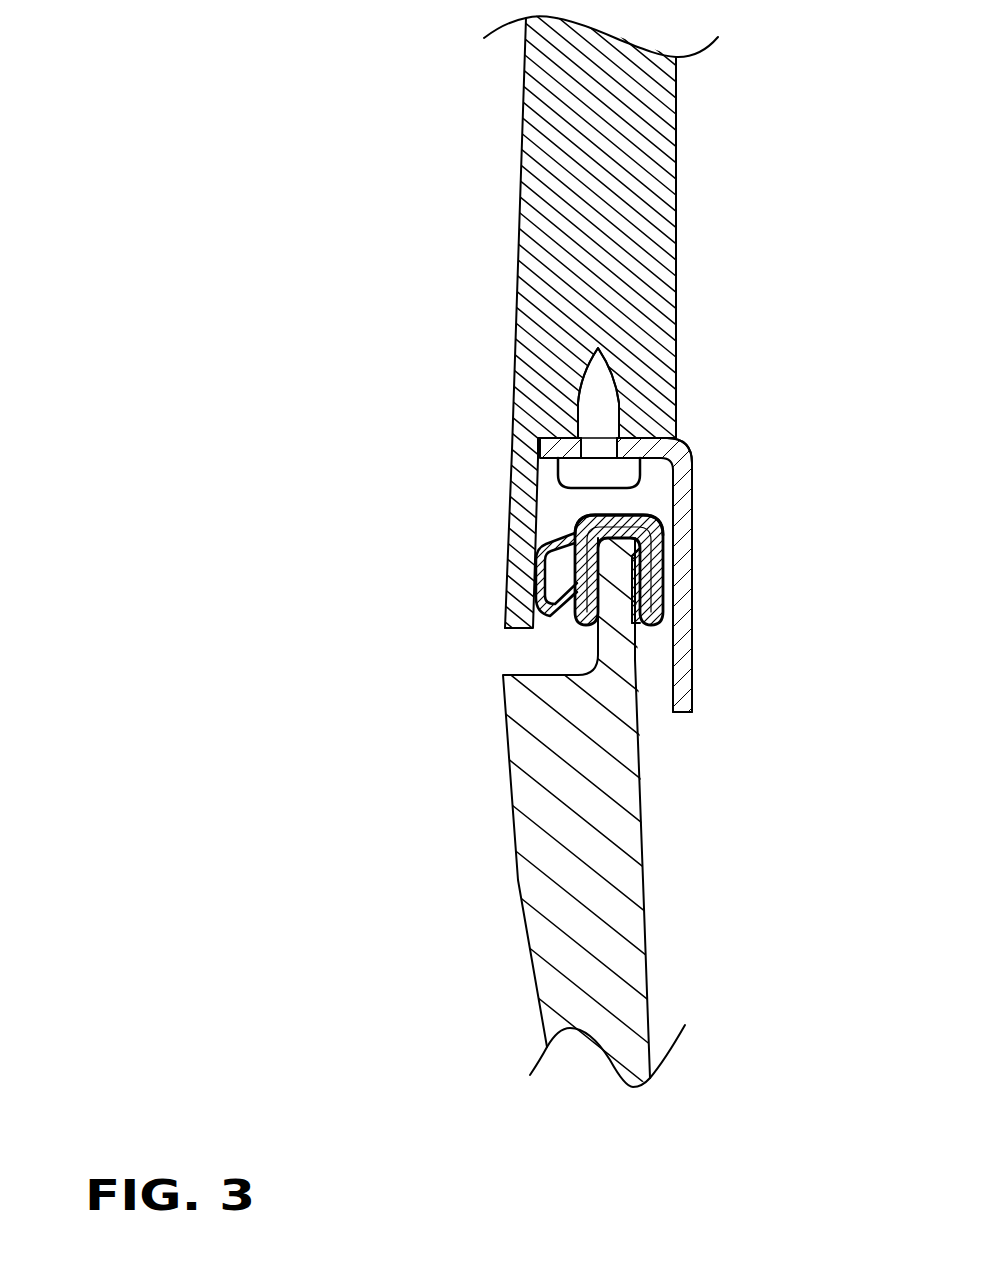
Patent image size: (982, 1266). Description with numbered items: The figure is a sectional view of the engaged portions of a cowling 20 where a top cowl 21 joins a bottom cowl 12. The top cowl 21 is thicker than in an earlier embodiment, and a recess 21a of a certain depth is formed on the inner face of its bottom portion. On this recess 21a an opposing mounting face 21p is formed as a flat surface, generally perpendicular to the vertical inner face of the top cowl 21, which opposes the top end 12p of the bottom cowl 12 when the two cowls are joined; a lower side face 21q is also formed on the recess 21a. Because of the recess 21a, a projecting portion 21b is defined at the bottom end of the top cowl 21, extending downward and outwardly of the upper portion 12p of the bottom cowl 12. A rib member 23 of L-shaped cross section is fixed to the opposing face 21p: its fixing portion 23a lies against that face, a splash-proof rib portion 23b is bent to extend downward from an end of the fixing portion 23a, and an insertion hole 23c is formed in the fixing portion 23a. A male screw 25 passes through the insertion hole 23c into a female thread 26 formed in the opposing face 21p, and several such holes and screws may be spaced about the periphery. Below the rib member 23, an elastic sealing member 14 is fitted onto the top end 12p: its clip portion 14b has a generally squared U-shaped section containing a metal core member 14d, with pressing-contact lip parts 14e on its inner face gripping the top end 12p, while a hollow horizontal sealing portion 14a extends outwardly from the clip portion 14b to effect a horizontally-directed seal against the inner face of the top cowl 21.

The cowling 20 is at (440, 142).
The top cowl 21 is at (520, 190).
The recess 21a is at (358, 360).
The opposing mounting face 21p is at (567, 437).
The lower side face 21q is at (510, 463).
The projecting portion 21b is at (523, 595).
The male screw 25 is at (598, 417).
The female thread 26 is at (604, 353).
The rib member 23 is at (720, 466).
The fixing portion 23a is at (683, 457).
The splash-proof rib portion 23b is at (692, 703).
The insertion hole 23c is at (662, 442).
The sealing member 14 is at (577, 632).
The horizontal sealing portion 14a is at (537, 549).
The clip portion 14b is at (660, 605).
The metal core member 14d is at (582, 528).
The pressing-contact lip parts 14e is at (660, 556).
The bottom cowl 12 is at (528, 847).
The top end of the bottom cowl 12p is at (612, 650).